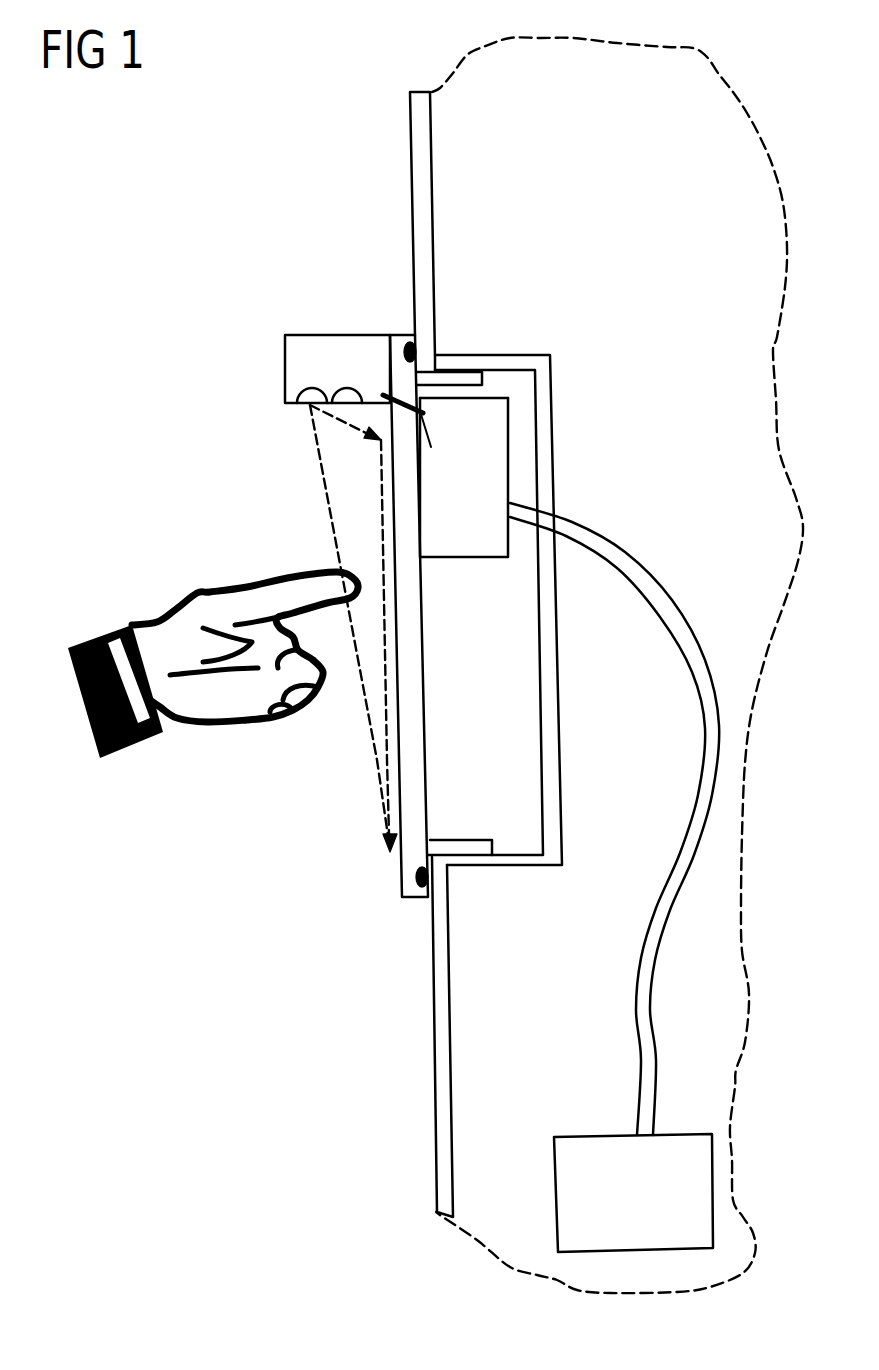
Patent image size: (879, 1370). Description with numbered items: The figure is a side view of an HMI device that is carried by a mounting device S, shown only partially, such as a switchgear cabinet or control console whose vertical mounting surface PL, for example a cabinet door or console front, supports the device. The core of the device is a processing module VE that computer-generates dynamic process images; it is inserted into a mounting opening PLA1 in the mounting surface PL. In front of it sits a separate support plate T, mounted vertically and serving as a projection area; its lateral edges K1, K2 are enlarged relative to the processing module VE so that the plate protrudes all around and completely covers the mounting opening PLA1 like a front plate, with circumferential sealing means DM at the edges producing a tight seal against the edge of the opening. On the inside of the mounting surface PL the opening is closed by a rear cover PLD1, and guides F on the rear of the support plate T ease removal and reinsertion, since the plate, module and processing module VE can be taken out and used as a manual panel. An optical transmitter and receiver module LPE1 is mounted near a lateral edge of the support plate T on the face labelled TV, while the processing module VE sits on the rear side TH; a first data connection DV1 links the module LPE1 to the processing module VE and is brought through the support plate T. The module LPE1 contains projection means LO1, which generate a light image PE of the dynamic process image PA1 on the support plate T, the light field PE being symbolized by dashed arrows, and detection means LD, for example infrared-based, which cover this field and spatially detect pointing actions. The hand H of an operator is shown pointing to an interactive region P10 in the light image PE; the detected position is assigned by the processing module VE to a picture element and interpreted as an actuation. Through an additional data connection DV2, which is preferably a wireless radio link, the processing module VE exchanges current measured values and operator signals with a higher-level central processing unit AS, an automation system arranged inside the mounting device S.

The mounting device S is at (483, 87).
The mounting surface PL is at (412, 139).
The optical transmitter and receiver module LPE1 is at (384, 395).
The projection means LO1 is at (347, 388).
The detection means LD is at (300, 390).
The light image PE is at (380, 472).
The dynamic process image PA1 is at (384, 548).
The interactive region P10 is at (377, 580).
The support plate T is at (405, 800).
The touch region TV is at (405, 848).
The rear side of the support plate TH is at (430, 810).
The lateral edge K1 is at (403, 343).
The lateral edge K2 is at (408, 898).
The circumferential sealing means DM is at (403, 333).
The rear cover PLD1 is at (533, 352).
The mounting opening PLA1 is at (423, 373).
The guides F is at (453, 376).
The processing module VE is at (505, 415).
The first data connection DV1 is at (423, 411).
The additional data connection DV2 is at (657, 594).
The central processing unit AS is at (615, 1158).
The hand of an operator H is at (72, 645).